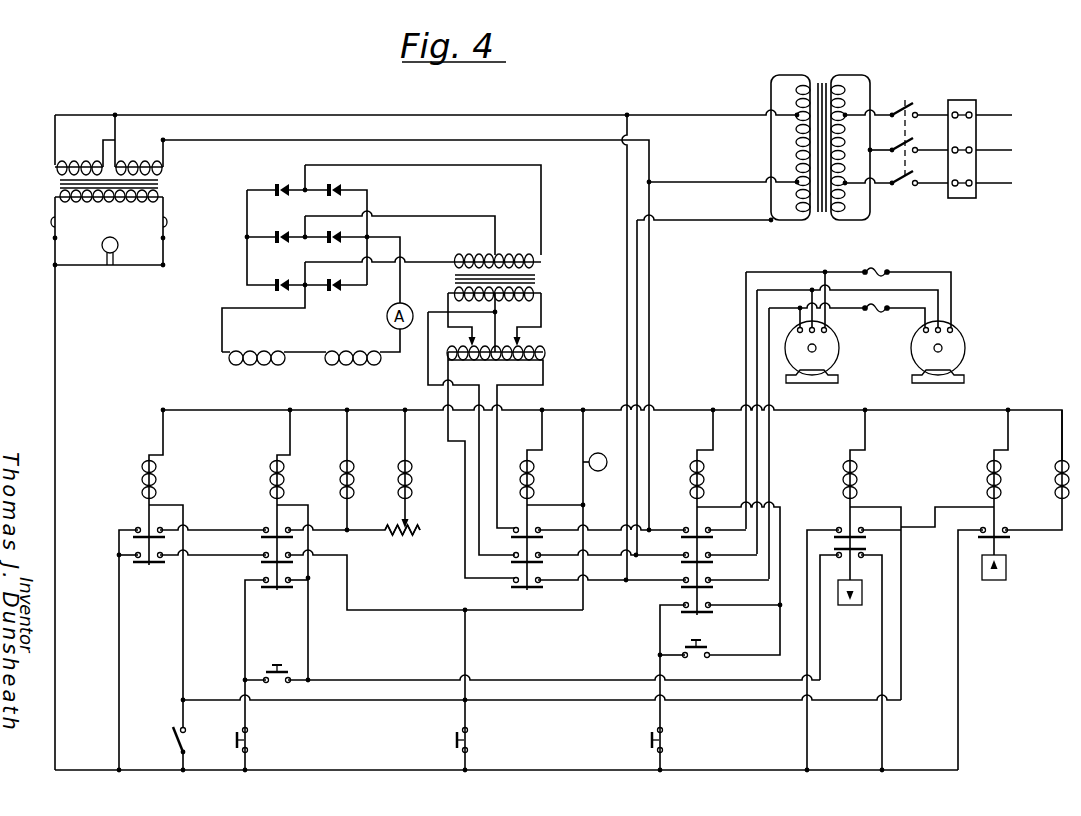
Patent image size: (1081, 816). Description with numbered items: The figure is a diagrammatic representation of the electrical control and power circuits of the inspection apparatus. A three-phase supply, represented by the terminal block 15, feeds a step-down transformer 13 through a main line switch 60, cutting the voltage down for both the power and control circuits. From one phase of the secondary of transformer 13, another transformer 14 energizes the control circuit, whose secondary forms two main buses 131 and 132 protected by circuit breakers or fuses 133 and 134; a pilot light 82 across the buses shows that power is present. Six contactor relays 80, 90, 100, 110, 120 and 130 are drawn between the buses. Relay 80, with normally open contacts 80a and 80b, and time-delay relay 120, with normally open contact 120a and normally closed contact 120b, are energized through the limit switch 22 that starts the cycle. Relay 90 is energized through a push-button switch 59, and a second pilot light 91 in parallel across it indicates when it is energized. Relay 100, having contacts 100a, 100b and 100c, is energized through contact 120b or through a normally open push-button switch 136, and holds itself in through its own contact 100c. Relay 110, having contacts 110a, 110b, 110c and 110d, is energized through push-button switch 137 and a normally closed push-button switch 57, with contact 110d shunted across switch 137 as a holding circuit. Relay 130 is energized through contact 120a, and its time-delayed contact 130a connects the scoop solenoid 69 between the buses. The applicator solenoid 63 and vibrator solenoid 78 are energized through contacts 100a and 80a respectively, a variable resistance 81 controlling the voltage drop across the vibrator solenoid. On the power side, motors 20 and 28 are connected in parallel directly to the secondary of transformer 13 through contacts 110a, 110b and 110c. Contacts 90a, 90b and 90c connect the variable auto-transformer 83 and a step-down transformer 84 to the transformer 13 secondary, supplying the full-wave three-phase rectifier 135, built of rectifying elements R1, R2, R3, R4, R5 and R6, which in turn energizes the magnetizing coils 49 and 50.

The step-down transformer 13 is at (823, 78).
The transformer 14 is at (164, 182).
The terminal block 15 is at (963, 98).
The motor 20 is at (840, 348).
The limit switch 22 is at (172, 746).
The motor 28 is at (966, 346).
The magnetizing coil 49 is at (352, 348).
The magnetizing coil 50 is at (264, 348).
The normally closed push-button switch 57 is at (669, 736).
The push-button switch 59 is at (460, 734).
The main line switch 60 is at (927, 110).
The applicator solenoid 63 is at (354, 466).
The scoop solenoid 69 is at (1058, 470).
The vibrator solenoid 78 is at (412, 486).
The contactor relay 80 is at (140, 474).
The normally open movable contact 80a is at (140, 528).
The normally open movable contact 80b is at (149, 568).
The variable resistance 81 is at (419, 526).
The pilot light 82 is at (116, 240).
The variable auto-transformer 83 is at (543, 347).
The step-down transformer 84 is at (543, 272).
The contactor relay 90 is at (530, 486).
The normally open movable contact 90a is at (532, 544).
The normally open movable contact 90b is at (532, 569).
The normally open movable contact 90c is at (532, 594).
The pilot light 91 is at (600, 453).
The contactor relay 100 is at (270, 488).
The normally open movable contact 100a is at (254, 540).
The normally open movable contact 100b is at (254, 565).
The normally open movable contact 100c is at (282, 592).
The contactor relay 110 is at (692, 462).
The normally open movable contact 110a is at (705, 544).
The normally open movable contact 110b is at (705, 569).
The normally open movable contact 110c is at (705, 594).
The normally open movable contact 110d is at (705, 619).
The contactor relay 120 is at (842, 472).
The normally open movable contact 120a is at (842, 528).
The normally closed movable contact 120b is at (866, 546).
The contactor relay 130 is at (984, 475).
The normally open movable contact 130a is at (1000, 538).
The main bus 131 is at (303, 410).
The main bus 132 is at (394, 770).
The circuit breaker or fuse 133 is at (170, 228).
The circuit breaker or fuse 134 is at (50, 232).
The full-wave three-phase rectifier 135 is at (381, 250).
The normally open push-button switch 136 is at (278, 667).
The push-button switch 137 is at (710, 649).
The rectifying element R1 is at (330, 203).
The rectifying element R2 is at (276, 203).
The rectifying element R3 is at (330, 250).
The rectifying element R4 is at (276, 250).
The rectifying element R5 is at (330, 297).
The rectifying element R6 is at (276, 297).